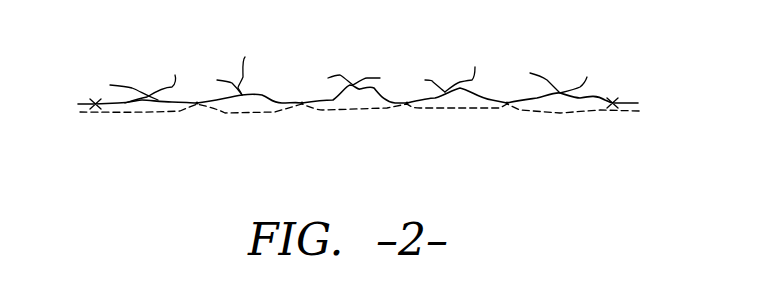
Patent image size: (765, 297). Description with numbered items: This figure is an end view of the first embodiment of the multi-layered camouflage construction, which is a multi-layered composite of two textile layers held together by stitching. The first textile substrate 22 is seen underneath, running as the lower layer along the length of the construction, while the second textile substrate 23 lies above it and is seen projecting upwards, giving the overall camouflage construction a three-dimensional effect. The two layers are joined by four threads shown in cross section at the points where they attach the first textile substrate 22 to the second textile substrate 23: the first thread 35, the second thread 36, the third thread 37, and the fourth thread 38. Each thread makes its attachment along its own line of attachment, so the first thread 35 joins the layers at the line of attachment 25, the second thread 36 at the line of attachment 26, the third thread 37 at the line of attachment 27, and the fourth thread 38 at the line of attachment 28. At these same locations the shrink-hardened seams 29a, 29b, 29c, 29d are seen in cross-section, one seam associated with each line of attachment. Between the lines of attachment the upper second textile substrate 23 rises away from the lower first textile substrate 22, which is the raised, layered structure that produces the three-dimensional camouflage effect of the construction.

The first textile substrate 22 is at (110, 106).
The second textile substrate 23 is at (110, 103).
The line of attachment 25 is at (193, 121).
The line of attachment 26 is at (298, 121).
The line of attachment 27 is at (402, 117).
The line of attachment 28 is at (505, 117).
The shrink-hardened seam 29a is at (197, 103).
The shrink-hardened seam 29b is at (302, 103).
The shrink-hardened seam 29c is at (407, 103).
The shrink-hardened seam 29d is at (507, 103).
The first thread 35 is at (197, 103).
The second thread 36 is at (302, 103).
The third thread 37 is at (407, 103).
The fourth thread 38 is at (508, 103).